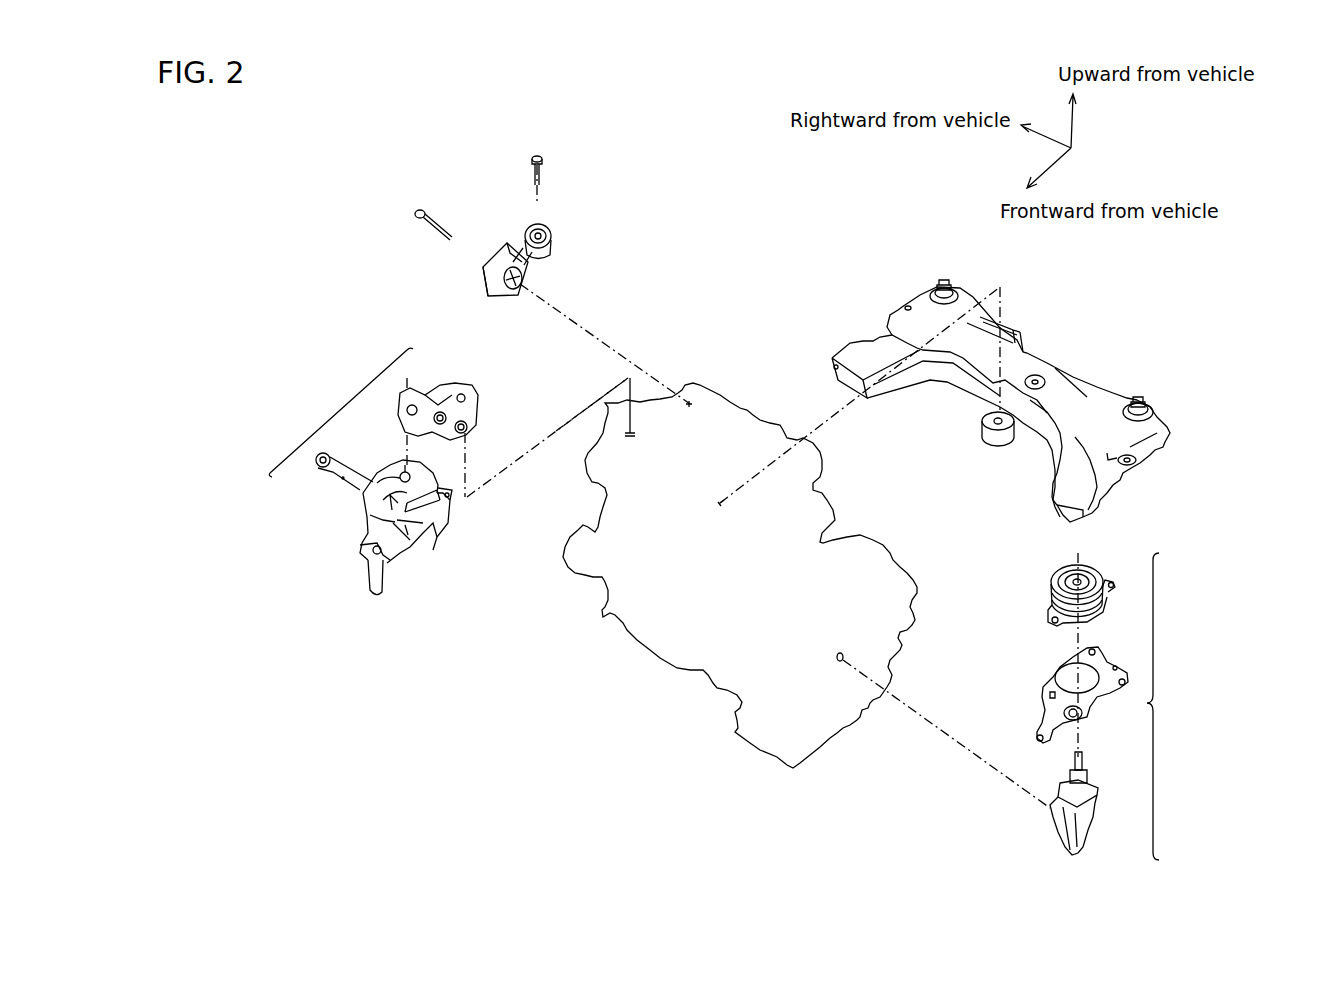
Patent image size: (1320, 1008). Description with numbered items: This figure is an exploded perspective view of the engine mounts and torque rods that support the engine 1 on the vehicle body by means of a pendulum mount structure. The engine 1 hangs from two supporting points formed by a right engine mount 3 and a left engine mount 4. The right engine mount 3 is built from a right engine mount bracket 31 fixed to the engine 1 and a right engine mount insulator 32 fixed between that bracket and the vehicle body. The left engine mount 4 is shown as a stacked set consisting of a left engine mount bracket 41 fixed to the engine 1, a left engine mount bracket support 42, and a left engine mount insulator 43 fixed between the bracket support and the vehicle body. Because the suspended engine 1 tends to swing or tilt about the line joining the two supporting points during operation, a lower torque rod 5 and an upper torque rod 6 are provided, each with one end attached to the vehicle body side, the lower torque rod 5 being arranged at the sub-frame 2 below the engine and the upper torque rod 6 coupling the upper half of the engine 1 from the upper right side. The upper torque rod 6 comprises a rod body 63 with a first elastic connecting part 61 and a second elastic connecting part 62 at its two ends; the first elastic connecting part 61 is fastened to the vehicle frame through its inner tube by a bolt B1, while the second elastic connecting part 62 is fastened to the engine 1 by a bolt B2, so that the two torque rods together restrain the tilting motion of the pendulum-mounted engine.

The engine 1 is at (737, 425).
The sub-frame 2 is at (921, 292).
The right engine mount 3 is at (408, 471).
The right engine mount bracket 31 is at (478, 402).
The right engine mount insulator 32 is at (433, 530).
The left engine mount 4 is at (1077, 701).
The left engine mount bracket 41 is at (1050, 812).
The left engine mount bracket support 42 is at (1045, 700).
The left engine mount insulator 43 is at (1050, 580).
The lower torque rod 5 is at (960, 432).
The upper torque rod 6 is at (560, 274).
The first elastic connecting part 61 is at (565, 243).
The second elastic connecting part 62 is at (505, 304).
The rod body 63 is at (521, 246).
The bolt B1 is at (555, 175).
The bolt B2 is at (449, 222).